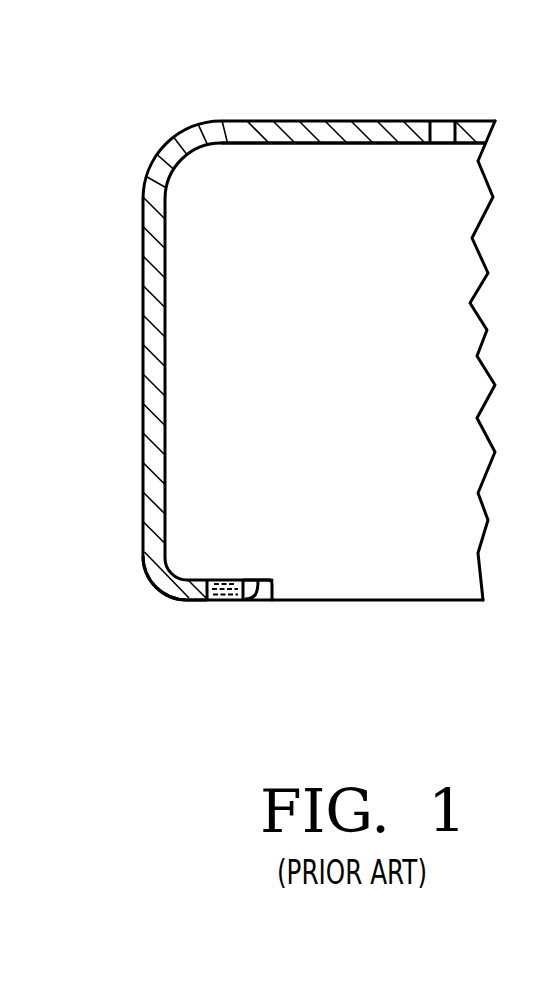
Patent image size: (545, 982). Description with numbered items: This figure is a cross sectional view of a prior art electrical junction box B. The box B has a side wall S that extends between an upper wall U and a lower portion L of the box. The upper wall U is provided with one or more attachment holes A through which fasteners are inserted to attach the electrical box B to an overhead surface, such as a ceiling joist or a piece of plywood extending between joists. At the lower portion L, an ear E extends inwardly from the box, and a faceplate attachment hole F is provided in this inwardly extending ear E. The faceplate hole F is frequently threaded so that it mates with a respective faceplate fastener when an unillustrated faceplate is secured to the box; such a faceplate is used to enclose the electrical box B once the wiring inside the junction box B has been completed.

The side wall S is at (142, 247).
The upper wall U is at (338, 146).
The attachment hole A is at (443, 129).
The electrical box B is at (343, 358).
The ear E is at (260, 580).
The faceplate attachment hole F is at (232, 603).
The lower portion L is at (160, 592).